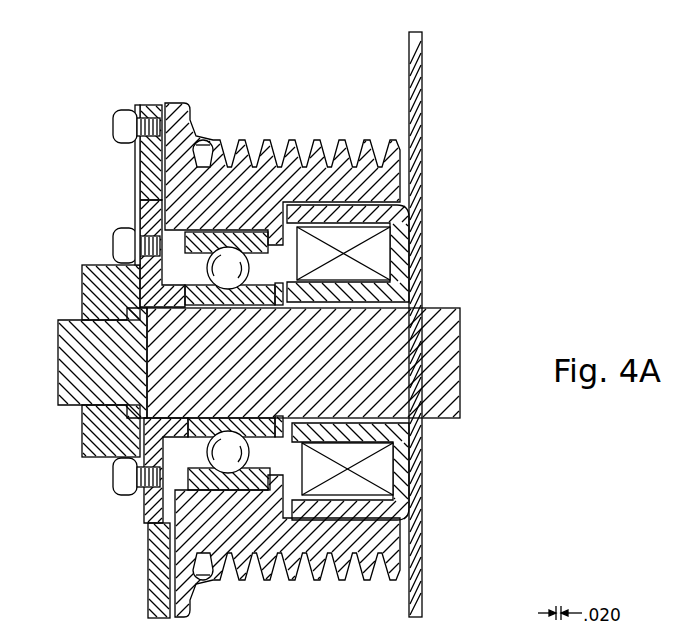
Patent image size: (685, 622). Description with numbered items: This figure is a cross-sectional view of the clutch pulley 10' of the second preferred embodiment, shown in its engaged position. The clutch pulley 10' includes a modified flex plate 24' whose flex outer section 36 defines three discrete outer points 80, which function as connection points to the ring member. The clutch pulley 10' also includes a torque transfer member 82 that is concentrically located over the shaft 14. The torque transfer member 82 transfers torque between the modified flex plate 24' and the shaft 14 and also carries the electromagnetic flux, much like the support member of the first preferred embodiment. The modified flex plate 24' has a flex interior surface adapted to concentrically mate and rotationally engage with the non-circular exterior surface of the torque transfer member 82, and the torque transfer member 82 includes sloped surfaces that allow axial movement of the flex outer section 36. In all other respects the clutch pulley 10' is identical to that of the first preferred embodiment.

The clutch pulley 10' is at (374, 320).
The shaft 14 is at (462, 357).
The modified flex plate 24' is at (105, 185).
The flex outer section 36 is at (137, 160).
The discrete outer points 80 is at (160, 130).
The torque transfer member 82 is at (150, 442).